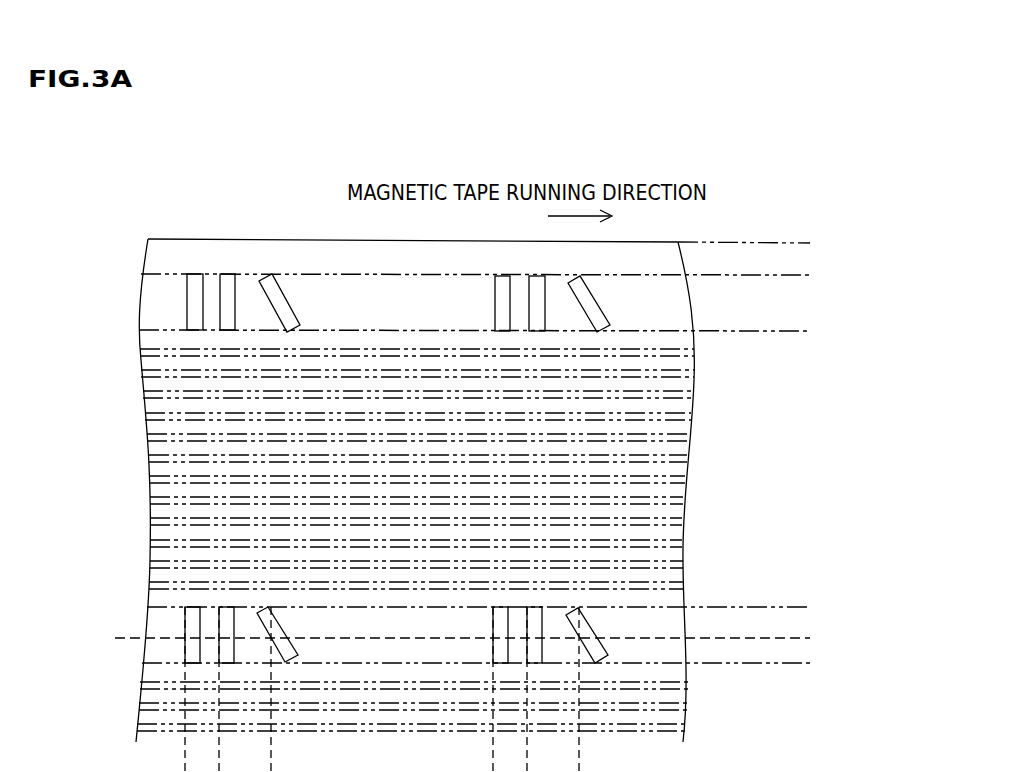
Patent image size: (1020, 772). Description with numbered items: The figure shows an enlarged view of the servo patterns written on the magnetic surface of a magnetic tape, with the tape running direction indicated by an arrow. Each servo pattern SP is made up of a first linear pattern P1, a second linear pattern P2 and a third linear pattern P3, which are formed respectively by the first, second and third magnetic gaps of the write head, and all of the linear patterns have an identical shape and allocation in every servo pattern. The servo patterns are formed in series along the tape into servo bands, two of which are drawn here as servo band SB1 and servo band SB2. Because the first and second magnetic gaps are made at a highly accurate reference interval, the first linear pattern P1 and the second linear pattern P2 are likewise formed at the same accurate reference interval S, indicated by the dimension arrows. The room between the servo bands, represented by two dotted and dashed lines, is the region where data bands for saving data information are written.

The first linear pattern P1 is at (195, 274).
The second linear pattern P2 is at (230, 274).
The third linear pattern P3 is at (287, 278).
The servo pattern SP is at (488, 87).
The servo band SB1 is at (741, 275).
The servo band SB2 is at (748, 600).
The reference interval S is at (247, 760).